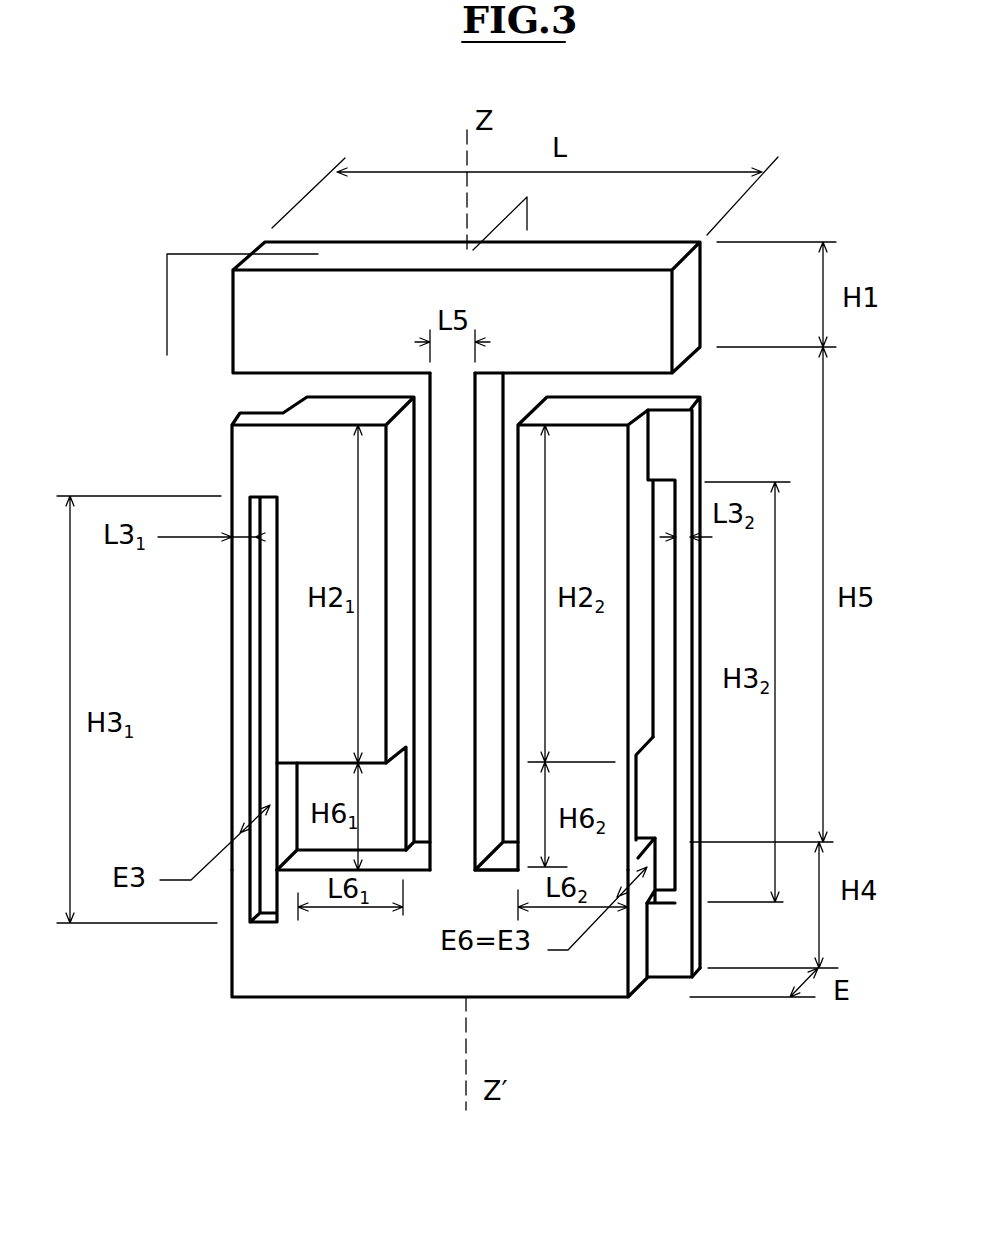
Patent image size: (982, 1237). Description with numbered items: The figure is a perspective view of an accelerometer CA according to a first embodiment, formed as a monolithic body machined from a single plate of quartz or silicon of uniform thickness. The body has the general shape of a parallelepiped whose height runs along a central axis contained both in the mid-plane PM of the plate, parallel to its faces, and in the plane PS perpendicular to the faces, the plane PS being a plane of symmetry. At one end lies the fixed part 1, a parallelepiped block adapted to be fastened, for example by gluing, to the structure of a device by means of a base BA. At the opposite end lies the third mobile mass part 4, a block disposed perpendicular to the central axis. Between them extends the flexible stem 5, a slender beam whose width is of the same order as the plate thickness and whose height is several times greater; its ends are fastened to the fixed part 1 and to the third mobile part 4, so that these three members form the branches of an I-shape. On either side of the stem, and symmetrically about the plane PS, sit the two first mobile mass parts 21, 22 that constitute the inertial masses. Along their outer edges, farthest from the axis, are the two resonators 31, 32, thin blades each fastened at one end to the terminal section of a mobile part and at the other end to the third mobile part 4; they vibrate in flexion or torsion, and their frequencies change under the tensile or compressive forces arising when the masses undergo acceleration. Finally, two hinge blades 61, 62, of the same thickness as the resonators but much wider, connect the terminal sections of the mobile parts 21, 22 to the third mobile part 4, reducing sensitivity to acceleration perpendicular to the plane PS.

The fixed part 1 is at (688, 303).
The first mobile mass part 21 is at (333, 515).
The first mobile mass part 22 is at (582, 498).
The resonator 31 is at (243, 637).
The resonator 32 is at (698, 602).
The third mobile mass part 4 is at (393, 957).
The flexible stem 5 is at (462, 403).
The hinge blade 61 is at (313, 788).
The hinge blade 62 is at (630, 787).
The mid-plane PM is at (195, 323).
The accelerometer CA is at (255, 190).
The base BA is at (763, 213).
The plane perpendicular to plate faces PS is at (515, 220).